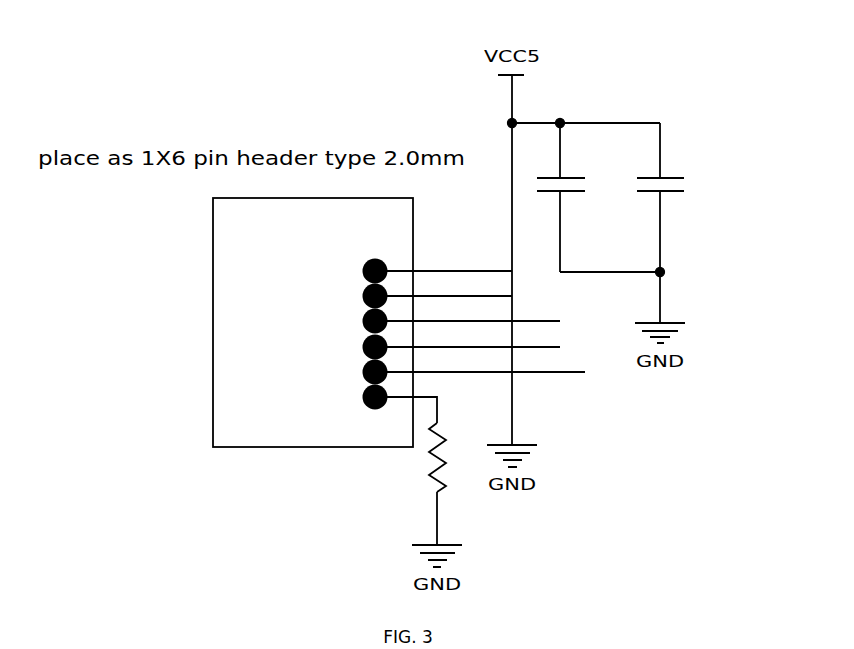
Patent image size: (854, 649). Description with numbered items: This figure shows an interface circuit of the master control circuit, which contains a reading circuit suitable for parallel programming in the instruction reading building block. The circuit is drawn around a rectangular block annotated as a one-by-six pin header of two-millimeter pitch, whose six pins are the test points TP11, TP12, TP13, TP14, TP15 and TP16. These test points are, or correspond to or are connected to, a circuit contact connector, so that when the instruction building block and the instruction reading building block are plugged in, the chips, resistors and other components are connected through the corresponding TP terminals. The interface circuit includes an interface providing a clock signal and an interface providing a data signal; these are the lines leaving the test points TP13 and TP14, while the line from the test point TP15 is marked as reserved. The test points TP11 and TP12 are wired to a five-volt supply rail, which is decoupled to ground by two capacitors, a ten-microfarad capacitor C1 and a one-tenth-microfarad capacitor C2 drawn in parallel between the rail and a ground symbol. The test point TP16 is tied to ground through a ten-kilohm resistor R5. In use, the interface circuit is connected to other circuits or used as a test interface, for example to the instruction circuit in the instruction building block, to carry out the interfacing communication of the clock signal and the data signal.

The capacitor 10uF/16V C1 is at (596, 197).
The capacitor 0.1uF/16V C2 is at (711, 223).
The resistor 10K R5 is at (453, 484).
The test point TP11 is at (400, 268).
The test point TP12 is at (400, 293).
The test point TP13 is at (424, 317).
The test point TP14 is at (424, 343).
The test point TP15 is at (437, 369).
The test point TP16 is at (363, 400).